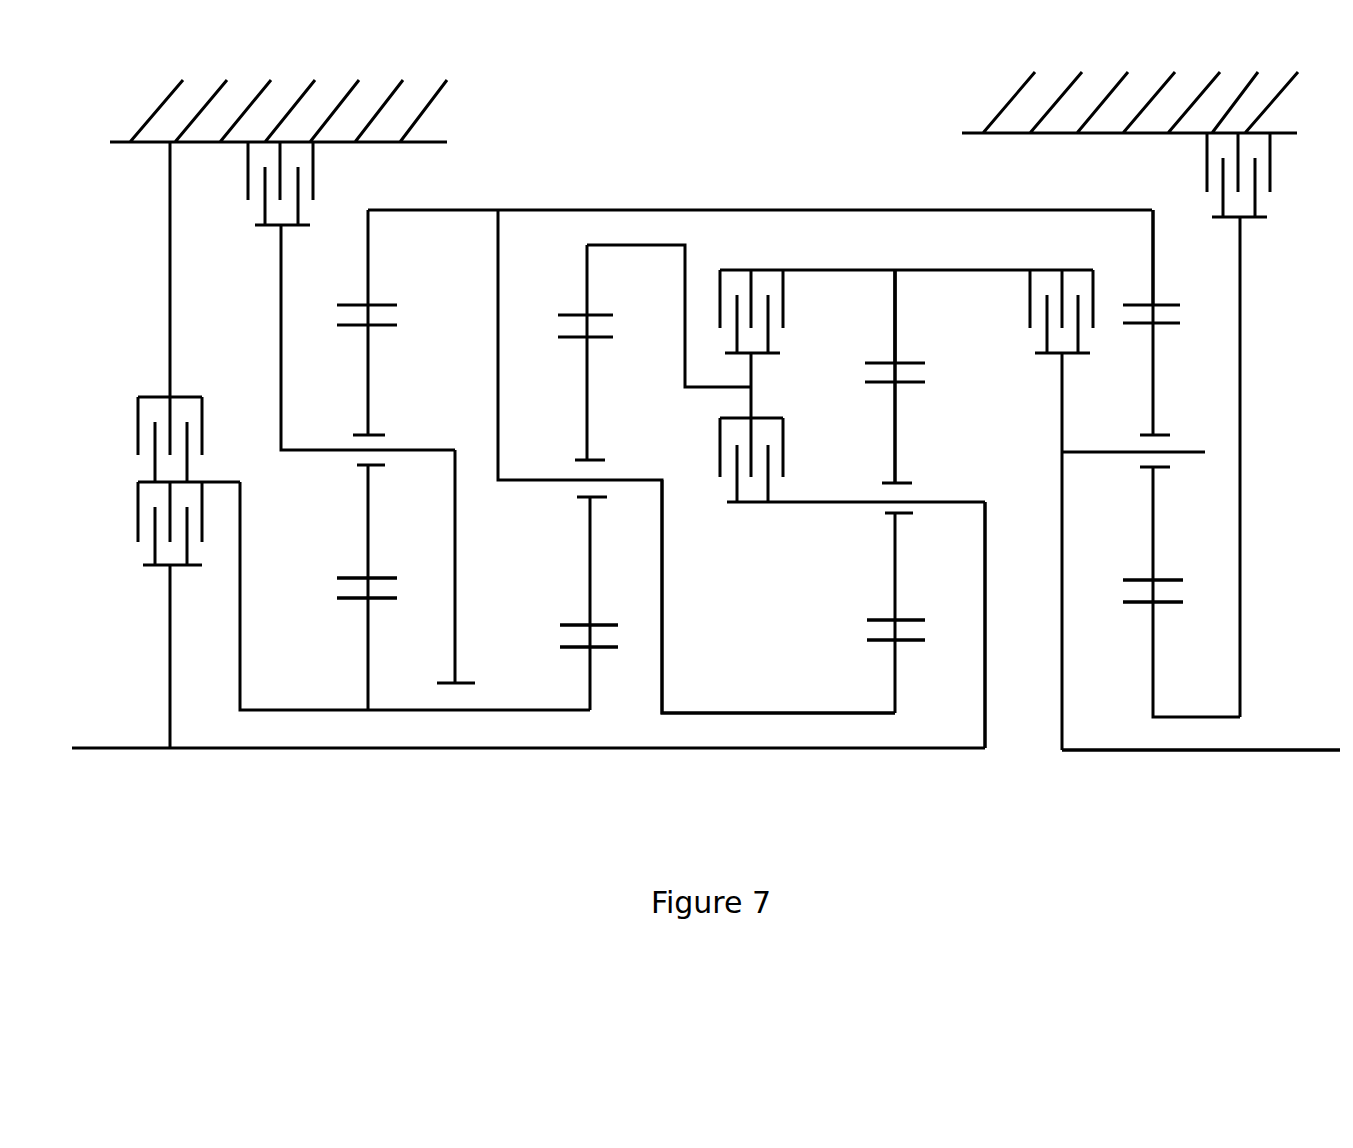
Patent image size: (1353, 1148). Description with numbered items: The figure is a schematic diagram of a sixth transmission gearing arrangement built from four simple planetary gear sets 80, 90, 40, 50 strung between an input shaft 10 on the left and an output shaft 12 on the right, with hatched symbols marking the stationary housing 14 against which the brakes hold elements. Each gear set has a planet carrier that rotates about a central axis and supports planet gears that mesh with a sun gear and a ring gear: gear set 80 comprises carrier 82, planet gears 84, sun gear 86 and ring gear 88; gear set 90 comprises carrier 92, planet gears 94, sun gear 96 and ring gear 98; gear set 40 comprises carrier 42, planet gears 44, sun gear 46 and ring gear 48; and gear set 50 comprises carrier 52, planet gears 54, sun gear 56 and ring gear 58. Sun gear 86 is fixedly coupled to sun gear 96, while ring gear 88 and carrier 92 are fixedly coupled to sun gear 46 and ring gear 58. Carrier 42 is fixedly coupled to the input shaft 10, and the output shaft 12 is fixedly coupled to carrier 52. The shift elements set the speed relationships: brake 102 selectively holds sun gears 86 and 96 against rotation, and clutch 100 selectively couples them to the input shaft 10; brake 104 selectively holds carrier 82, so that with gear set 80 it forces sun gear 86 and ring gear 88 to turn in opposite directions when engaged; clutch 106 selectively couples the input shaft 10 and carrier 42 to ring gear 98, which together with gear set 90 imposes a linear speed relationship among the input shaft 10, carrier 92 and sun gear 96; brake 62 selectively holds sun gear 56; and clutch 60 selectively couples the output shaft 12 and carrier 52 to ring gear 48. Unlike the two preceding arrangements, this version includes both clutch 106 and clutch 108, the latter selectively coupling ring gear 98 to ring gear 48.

The input shaft 10 is at (93, 750).
The output shaft 12 is at (1293, 750).
The transmission housing (ground) 14 is at (423, 97).
The planetary gear set 40 is at (936, 539).
The carrier 42 is at (960, 502).
The planet gears 44 is at (895, 435).
The sun gear 46 is at (900, 688).
The ring gear 48 is at (895, 305).
The planetary gear set 50 is at (1201, 778).
The carrier 52 is at (1062, 502).
The planet gears 54 is at (1155, 392).
The sun gear 56 is at (1157, 647).
The ring gear 58 is at (1152, 257).
The clutch 60 is at (1077, 268).
The brake 62 is at (1207, 160).
The planetary gear set 80 is at (696, 509).
The carrier 82 is at (457, 625).
The planet gears 84 is at (372, 402).
The sun gear 86 is at (370, 645).
The ring gear 88 is at (363, 253).
The planetary gear set 90 is at (696, 509).
The carrier 92 is at (662, 618).
The planet gears 94 is at (590, 415).
The sun gear 96 is at (588, 667).
The ring gear 98 is at (587, 268).
The clutch 100 is at (138, 512).
The brake 102 is at (200, 428).
The brake 104 is at (313, 167).
The clutch 106 is at (742, 503).
The clutch 108 is at (730, 268).